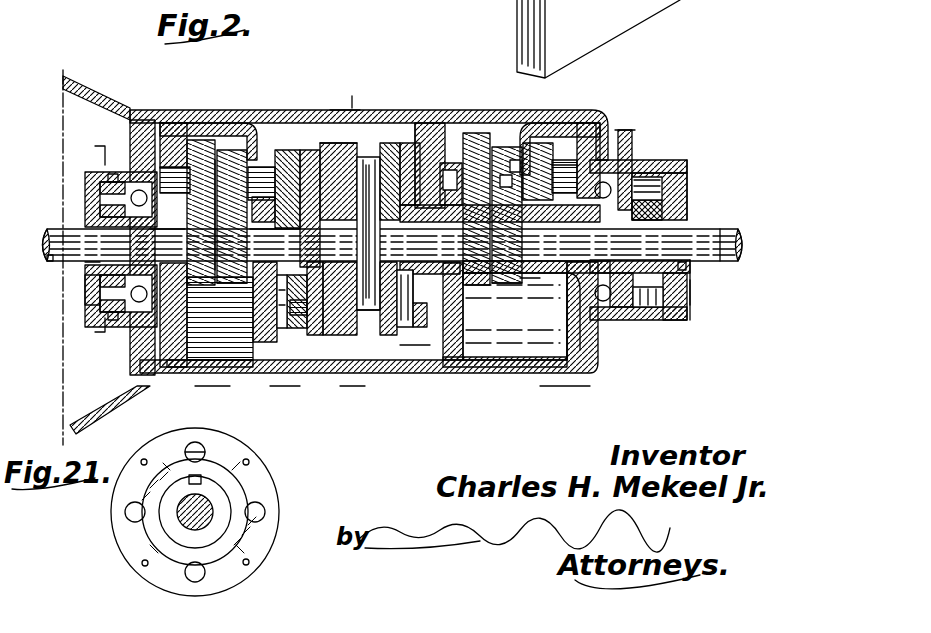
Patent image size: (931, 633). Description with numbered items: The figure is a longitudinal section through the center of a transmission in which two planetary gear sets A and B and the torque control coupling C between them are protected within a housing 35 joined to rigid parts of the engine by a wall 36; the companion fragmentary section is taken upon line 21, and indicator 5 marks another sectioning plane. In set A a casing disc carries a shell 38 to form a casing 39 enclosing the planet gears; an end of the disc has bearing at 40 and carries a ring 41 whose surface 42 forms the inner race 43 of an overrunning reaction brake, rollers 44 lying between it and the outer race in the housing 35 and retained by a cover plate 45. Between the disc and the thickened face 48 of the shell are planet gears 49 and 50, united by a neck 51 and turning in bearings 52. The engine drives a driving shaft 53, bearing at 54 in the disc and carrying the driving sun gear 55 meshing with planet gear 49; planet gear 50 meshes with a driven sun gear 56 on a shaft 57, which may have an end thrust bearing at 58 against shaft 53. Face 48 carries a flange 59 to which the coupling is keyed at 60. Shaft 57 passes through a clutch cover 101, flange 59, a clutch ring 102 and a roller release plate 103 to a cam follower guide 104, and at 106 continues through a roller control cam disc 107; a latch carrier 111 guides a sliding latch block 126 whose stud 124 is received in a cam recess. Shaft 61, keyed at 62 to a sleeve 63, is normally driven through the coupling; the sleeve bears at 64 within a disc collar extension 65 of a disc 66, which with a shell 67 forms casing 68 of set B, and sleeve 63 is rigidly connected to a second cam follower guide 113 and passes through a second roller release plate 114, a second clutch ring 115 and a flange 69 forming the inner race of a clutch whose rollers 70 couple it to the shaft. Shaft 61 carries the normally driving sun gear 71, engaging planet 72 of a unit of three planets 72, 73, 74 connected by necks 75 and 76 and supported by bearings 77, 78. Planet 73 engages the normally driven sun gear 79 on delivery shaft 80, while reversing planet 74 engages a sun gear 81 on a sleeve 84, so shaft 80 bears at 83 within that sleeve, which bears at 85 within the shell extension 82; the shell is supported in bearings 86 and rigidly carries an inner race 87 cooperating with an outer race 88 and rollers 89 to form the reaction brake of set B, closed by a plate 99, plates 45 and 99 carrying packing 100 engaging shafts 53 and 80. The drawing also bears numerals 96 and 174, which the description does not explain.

In FIG. 2, the section line 5- 5 is at (350, 93).
In FIG. 2, the section line 21 is at (106, 160).
In FIG. 2, the housing 35 is at (428, 110).
In FIG. 2, the wall 36 is at (95, 92).
In FIG. 2, the shell 38 is at (283, 386).
In FIG. 2, the casing 39 is at (210, 386).
In FIG. 2, the bearing 40 is at (143, 120).
In FIG. 2, the ring 41 is at (100, 197).
In FIG. 21, the ring 41 is at (232, 535).
In FIG. 2, the surface 42 is at (100, 186).
In FIG. 2, the inner race 43 is at (105, 175).
In FIG. 21, the inner race 43 is at (199, 448).
In FIG. 2, the rollers 44 is at (112, 174).
In FIG. 21, the rollers 44 is at (201, 453).
In FIG. 2, the cover plate 45 is at (92, 300).
In FIG. 2, the thickened face 48 is at (268, 197).
In FIG. 2, the planet gear 49 is at (195, 140).
In FIG. 2, the driven planet gear 50 is at (262, 167).
In FIG. 2, the neck 51 is at (225, 150).
In FIG. 2, the bearings 52 is at (172, 167).
In FIG. 2, the driving shaft 53 is at (48, 255).
In FIG. 21, the driving shaft 53 is at (201, 509).
In FIG. 2, the bearing 54 is at (90, 265).
In FIG. 2, the driving sun gear 55 is at (167, 241).
In FIG. 2, the driven sun gear 56 is at (275, 241).
In FIG. 2, the shaft 57 is at (175, 290).
In FIG. 2, the end thrust bearing 58 is at (250, 325).
In FIG. 2, the flange 59 is at (308, 155).
In FIG. 2, the key 60 is at (287, 160).
In FIG. 2, the shaft 61 is at (503, 239).
In FIG. 2, the key 62 is at (395, 330).
In FIG. 2, the sleeve 63 is at (400, 345).
In FIG. 2, the bearing 64 is at (448, 330).
In FIG. 2, the disc collar extension 65 is at (410, 345).
In FIG. 2, the disc 66 is at (463, 318).
In FIG. 2, the shell 67 is at (568, 330).
In FIG. 2, the casing 68 is at (562, 386).
In FIG. 2, the flange 69 is at (470, 133).
In FIG. 2, the rollers 70 is at (440, 160).
In FIG. 2, the normally driving sun gear 71 is at (478, 274).
In FIG. 2, the planet gear 72 is at (500, 147).
In FIG. 2, the planet gear 73 is at (520, 160).
In FIG. 2, the reversing planet gear 74 is at (567, 160).
In FIG. 2, the neck 75 is at (510, 175).
In FIG. 2, the neck 76 is at (540, 143).
In FIG. 2, the bearing 77 is at (451, 183).
In FIG. 2, the bearing 78 is at (564, 172).
In FIG. 2, the normally driven sun gear 79 is at (505, 284).
In FIG. 2, the delivery shaft 80 is at (737, 230).
In FIG. 2, the sun gear 81 is at (530, 280).
In FIG. 2, the shell extension 82 is at (623, 130).
In FIG. 2, the bearing 83 is at (665, 222).
In FIG. 2, the sleeve 84 is at (668, 273).
In FIG. 2, the bearing 85 is at (567, 312).
In FIG. 2, the bearings 86 is at (642, 185).
In FIG. 2, the inner race 87 is at (665, 200).
In FIG. 2, the outer race 88 is at (652, 190).
In FIG. 2, the rollers 89 is at (678, 215).
In FIG. 2, the shift lever 96 is at (598, 39).
In FIG. 2, the plate 99 is at (688, 293).
In FIG. 2, the packing 100 is at (47, 233).
In FIG. 2, the clutch cover 101 is at (318, 395).
In FIG. 2, the clutch ring 102 is at (228, 284).
In FIG. 2, the roller release plate 103 is at (343, 110).
In FIG. 2, the cam follower guide 104 is at (306, 320).
In FIG. 2, the shaft and sleeve portion 106 is at (352, 386).
In FIG. 2, the roller control cam disc 107 is at (336, 143).
In FIG. 2, the latch carrier 111 is at (365, 322).
In FIG. 2, the second cam follower guide 113 is at (405, 345).
In FIG. 2, the second roller release plate 114 is at (397, 143).
In FIG. 2, the second clutch ring 115 is at (418, 143).
In FIG. 2, the studs 124 is at (362, 157).
In FIG. 2, the sliding latch block 126 is at (368, 160).
In FIG. 2, the flange 174 is at (632, 132).
In FIG. 2, the planetary gear set A is at (238, 150).
In FIG. 2, the planetary gear set B is at (528, 97).
In FIG. 2, the torque control coupling C is at (338, 230).